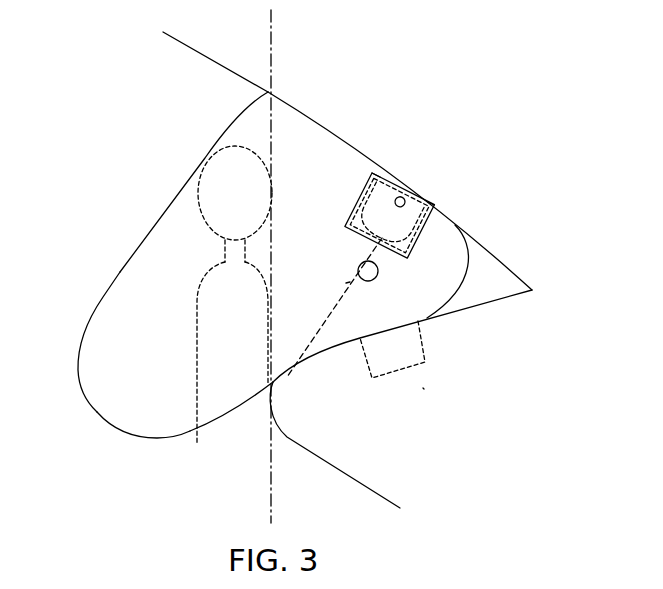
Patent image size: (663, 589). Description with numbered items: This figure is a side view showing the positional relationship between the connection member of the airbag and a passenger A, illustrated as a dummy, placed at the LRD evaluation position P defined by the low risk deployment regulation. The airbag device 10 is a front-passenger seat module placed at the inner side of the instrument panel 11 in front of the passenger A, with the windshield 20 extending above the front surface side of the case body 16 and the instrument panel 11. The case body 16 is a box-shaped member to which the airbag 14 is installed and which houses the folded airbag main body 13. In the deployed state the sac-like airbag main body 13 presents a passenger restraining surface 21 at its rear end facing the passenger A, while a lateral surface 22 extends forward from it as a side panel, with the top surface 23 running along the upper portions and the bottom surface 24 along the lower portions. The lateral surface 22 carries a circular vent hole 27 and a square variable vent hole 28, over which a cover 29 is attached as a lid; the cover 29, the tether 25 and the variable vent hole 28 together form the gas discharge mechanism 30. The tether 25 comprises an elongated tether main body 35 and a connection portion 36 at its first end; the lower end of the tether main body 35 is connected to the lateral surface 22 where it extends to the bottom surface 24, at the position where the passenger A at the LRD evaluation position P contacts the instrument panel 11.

The airbag device 10 is at (430, 396).
The instrument panel 11 is at (478, 257).
The airbag main body 13 is at (468, 232).
The airbag 14 is at (212, 126).
The case body 16 is at (425, 350).
The windshield 20 is at (220, 66).
The passenger restraining surface 21 is at (103, 290).
The lateral surface 22 is at (160, 439).
The top surface 23 is at (340, 143).
The bottom surface 24 is at (233, 408).
The tether 25 is at (334, 283).
The vent hole 27 is at (379, 275).
The variable vent hole 28 is at (400, 197).
The cover 29 is at (436, 206).
The gas discharge mechanism 30 is at (372, 175).
The tether main body 35 is at (330, 306).
The connection portion 36 is at (358, 213).
The LRD evaluation position P is at (272, 42).
The passenger A is at (203, 160).